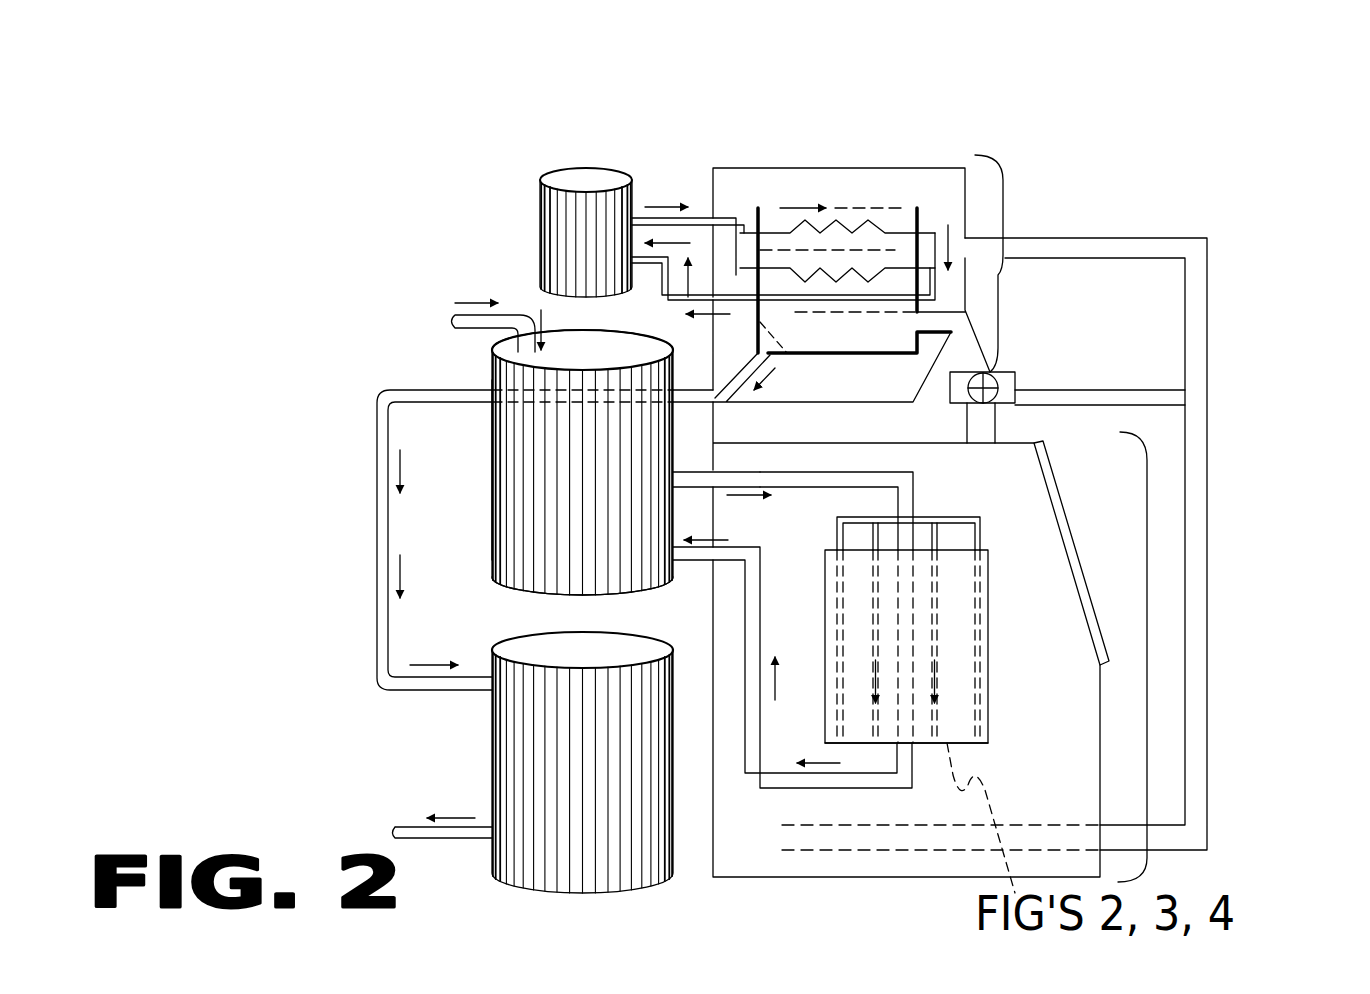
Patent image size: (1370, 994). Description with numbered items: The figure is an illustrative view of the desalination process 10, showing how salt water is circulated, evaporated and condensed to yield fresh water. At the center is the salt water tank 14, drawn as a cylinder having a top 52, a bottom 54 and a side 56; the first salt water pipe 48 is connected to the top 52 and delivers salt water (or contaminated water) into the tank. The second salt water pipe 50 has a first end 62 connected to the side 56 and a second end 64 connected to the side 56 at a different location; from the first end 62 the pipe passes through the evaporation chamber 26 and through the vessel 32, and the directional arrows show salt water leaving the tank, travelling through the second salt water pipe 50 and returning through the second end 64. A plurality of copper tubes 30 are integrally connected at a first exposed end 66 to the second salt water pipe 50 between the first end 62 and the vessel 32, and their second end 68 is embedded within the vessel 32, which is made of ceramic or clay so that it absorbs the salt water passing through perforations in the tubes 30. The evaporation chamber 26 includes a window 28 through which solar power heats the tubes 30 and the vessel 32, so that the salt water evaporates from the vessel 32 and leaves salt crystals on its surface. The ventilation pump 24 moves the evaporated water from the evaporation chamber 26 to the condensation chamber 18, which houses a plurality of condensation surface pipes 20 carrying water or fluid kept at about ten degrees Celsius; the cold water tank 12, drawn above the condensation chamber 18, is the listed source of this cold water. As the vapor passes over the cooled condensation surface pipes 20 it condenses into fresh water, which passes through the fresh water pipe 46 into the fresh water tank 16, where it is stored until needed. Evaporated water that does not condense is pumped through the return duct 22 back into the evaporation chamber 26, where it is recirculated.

The desalination process 10 is at (360, 186).
The cold water tank 12 is at (540, 242).
The salt water tank 14 is at (492, 372).
The fresh water tank 16 is at (492, 748).
The condensation chamber 18 is at (1010, 263).
The condensation surface pipes 20 is at (840, 220).
The return duct 22 is at (1208, 285).
The ventilation pump 24 is at (1017, 385).
The evaporation chamber 26 is at (1150, 667).
The window 28 is at (1088, 577).
The tubes 30 is at (978, 668).
The vessel 32 is at (988, 717).
The fresh water pipe 46 is at (377, 570).
The first salt water pipe 48 is at (455, 322).
The second salt water pipe 50 is at (893, 480).
The top 52 is at (602, 347).
The bottom 54 is at (512, 583).
The side 56 is at (497, 493).
The first end 62 is at (675, 468).
The second end 64 is at (673, 548).
The first exposed end 66 is at (977, 520).
The second end 68 is at (980, 553).